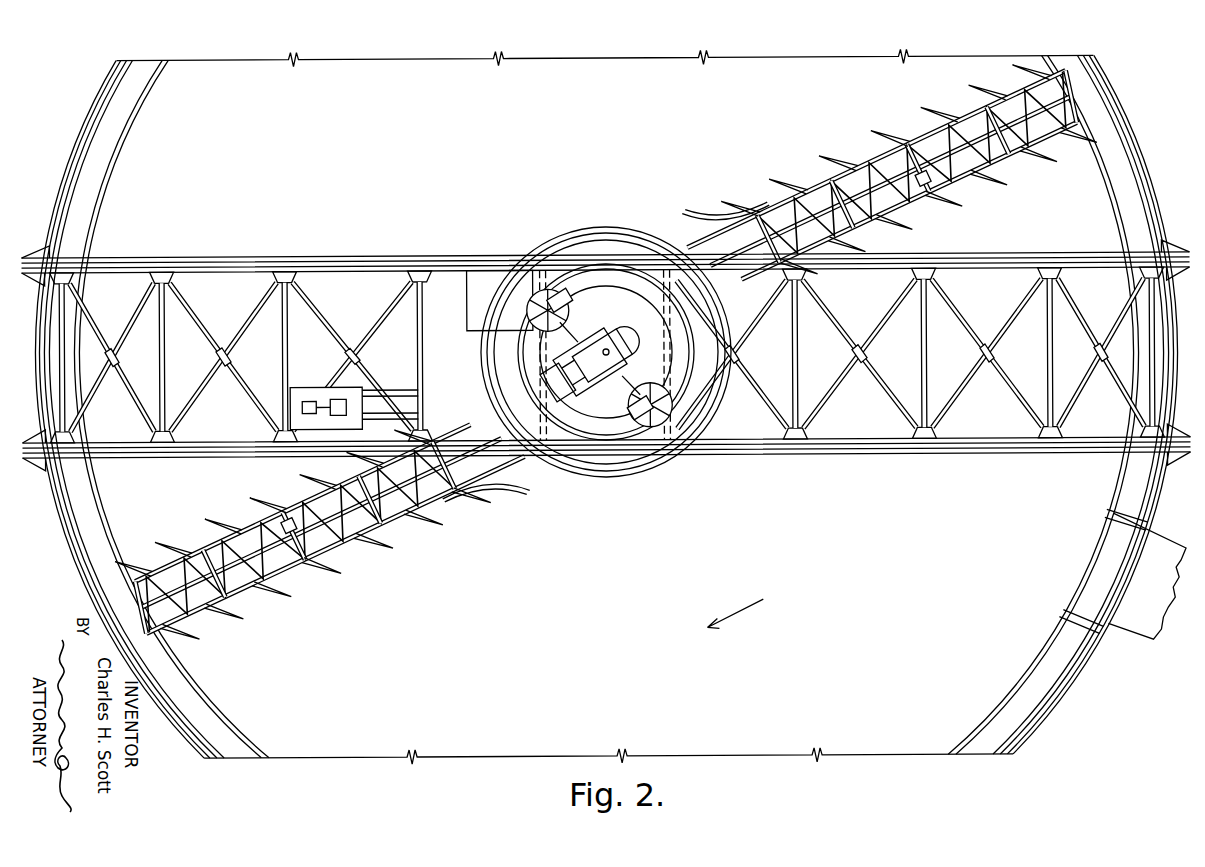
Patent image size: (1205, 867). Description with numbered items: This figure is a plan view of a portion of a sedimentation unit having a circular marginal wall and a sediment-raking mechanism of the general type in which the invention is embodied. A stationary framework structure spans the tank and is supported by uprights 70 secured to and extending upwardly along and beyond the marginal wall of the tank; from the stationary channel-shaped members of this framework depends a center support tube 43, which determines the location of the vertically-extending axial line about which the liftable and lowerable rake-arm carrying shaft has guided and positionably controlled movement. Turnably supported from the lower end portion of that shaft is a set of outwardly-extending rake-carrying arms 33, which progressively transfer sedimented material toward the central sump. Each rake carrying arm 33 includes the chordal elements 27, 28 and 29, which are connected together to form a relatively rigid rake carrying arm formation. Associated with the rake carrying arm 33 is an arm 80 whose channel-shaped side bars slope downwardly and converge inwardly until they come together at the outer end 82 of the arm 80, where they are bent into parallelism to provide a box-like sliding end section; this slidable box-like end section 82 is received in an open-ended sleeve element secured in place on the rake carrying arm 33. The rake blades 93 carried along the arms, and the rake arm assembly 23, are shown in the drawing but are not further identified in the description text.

The rake arm 23 is at (422, 490).
The chordal element 27 is at (938, 192).
The chordal element 28 is at (948, 148).
The chordal element 29 is at (866, 180).
The rake-carrying arm 33 is at (855, 140).
The center support tube 43 is at (610, 349).
The upright 70 is at (52, 252).
The arm 80 is at (290, 472).
The outer end of the arm 82 is at (922, 190).
The rake blades 93 is at (818, 156).